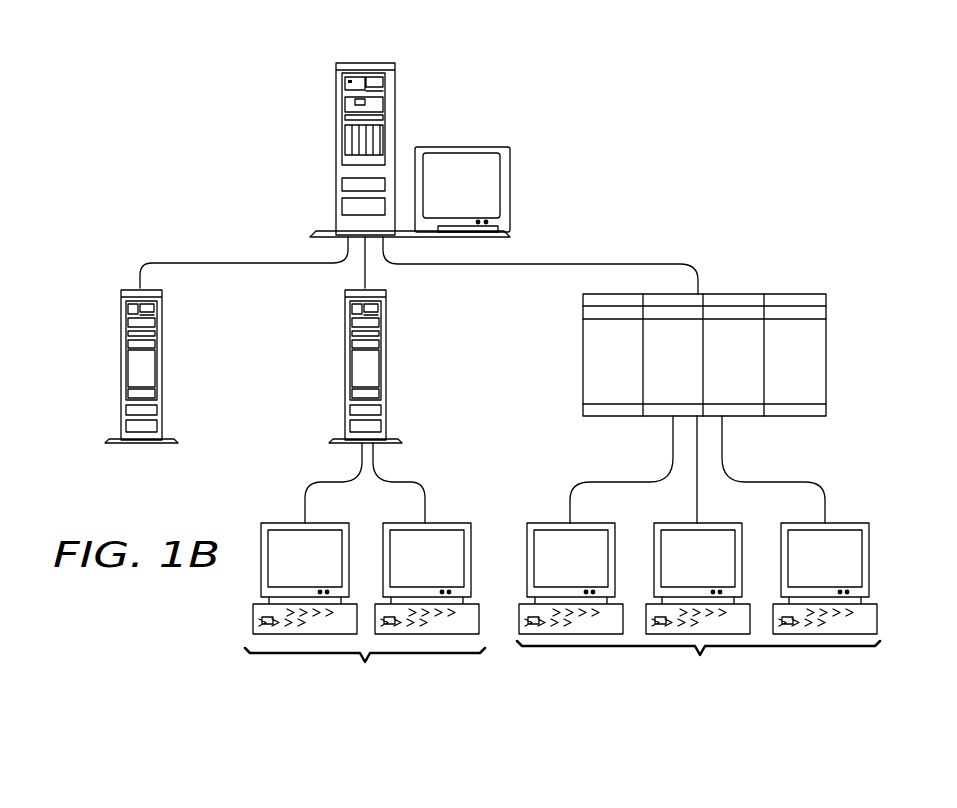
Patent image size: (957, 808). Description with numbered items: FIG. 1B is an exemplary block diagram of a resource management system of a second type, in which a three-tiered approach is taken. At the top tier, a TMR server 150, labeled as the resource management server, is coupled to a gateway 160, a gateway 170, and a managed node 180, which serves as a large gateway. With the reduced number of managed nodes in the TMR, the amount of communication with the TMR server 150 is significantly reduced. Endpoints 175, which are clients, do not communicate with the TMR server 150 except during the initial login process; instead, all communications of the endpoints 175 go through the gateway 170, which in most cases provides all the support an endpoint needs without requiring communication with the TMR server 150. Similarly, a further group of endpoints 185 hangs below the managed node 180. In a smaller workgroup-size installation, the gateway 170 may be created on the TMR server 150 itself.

The TMR server 150 is at (355, 130).
The gateway 160 is at (102, 366).
The gateway 170 is at (322, 366).
The managed node 180 is at (713, 294).
The endpoints 175 is at (365, 585).
The endpoints 185 is at (698, 569).